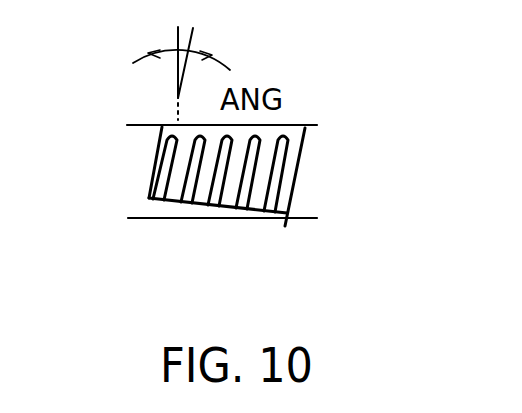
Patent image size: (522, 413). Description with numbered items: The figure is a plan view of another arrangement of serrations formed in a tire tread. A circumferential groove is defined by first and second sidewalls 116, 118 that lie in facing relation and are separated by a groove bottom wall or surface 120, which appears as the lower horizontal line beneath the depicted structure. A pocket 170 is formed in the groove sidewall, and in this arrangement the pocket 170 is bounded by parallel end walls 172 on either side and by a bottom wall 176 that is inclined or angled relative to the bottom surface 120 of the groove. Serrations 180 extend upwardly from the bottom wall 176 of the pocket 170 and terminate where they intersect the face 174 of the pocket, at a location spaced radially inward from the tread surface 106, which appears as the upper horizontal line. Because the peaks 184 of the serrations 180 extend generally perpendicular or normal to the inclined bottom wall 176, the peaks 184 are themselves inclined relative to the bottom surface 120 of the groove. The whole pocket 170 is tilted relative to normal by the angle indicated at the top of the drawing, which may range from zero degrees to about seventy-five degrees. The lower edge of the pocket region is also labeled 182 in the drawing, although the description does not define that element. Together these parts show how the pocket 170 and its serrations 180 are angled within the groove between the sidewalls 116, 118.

The tread surface 106 is at (132, 124).
The groove bottom wall 120 is at (313, 217).
The end walls 172 is at (159, 146).
The bottom edge of bristle carrier 182 is at (148, 193).
The peaks 184 is at (168, 162).
The pocket 170 is at (300, 84).
The face 174 is at (298, 127).
The bottom wall 176 is at (203, 205).
The serrations 180 is at (235, 207).
The first sidewall 116 is at (140, 213).
The second sidewall 118 is at (140, 213).